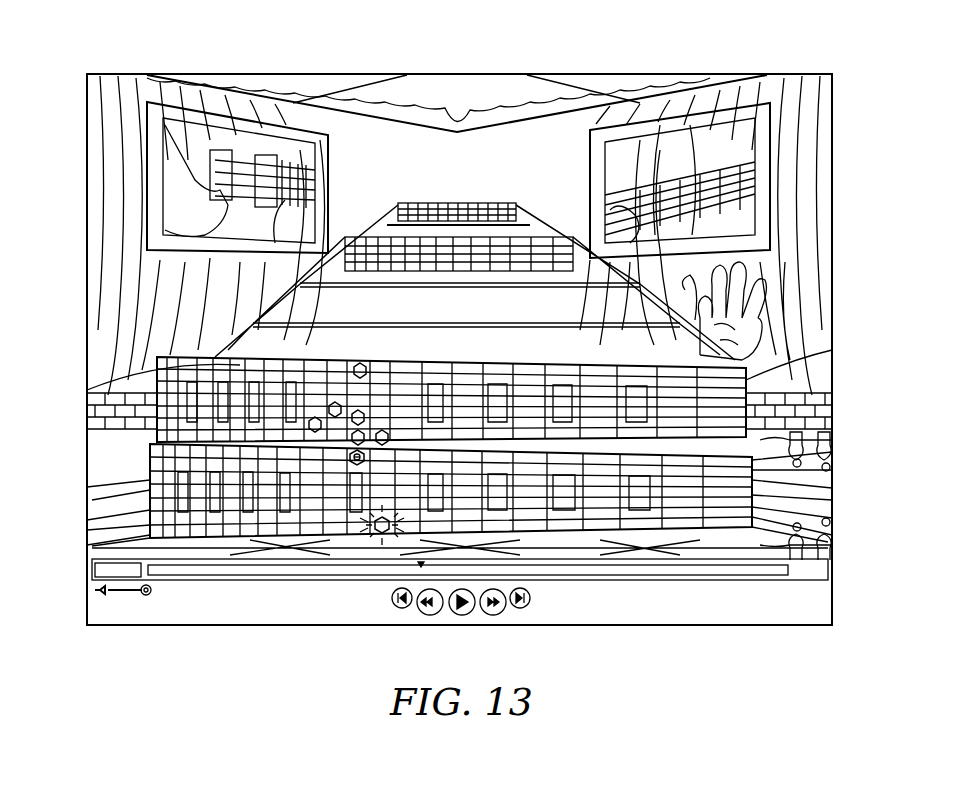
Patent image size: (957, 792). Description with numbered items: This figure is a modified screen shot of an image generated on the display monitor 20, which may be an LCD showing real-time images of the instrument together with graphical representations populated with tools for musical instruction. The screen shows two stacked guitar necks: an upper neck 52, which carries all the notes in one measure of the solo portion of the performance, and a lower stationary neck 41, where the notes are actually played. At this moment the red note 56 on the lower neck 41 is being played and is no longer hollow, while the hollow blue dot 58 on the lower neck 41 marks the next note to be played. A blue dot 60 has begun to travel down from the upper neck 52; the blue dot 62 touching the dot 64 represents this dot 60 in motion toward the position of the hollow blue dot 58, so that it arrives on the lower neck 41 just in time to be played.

The display monitor 20 is at (88, 52).
The upper neck 52 is at (740, 390).
The dot of the third color 60 is at (359, 364).
The blue dot 62 is at (362, 415).
The dot 64 is at (364, 432).
The stationary neck 41 is at (777, 530).
The hollow dot of a third color 58 is at (352, 460).
The red note 56 is at (378, 532).